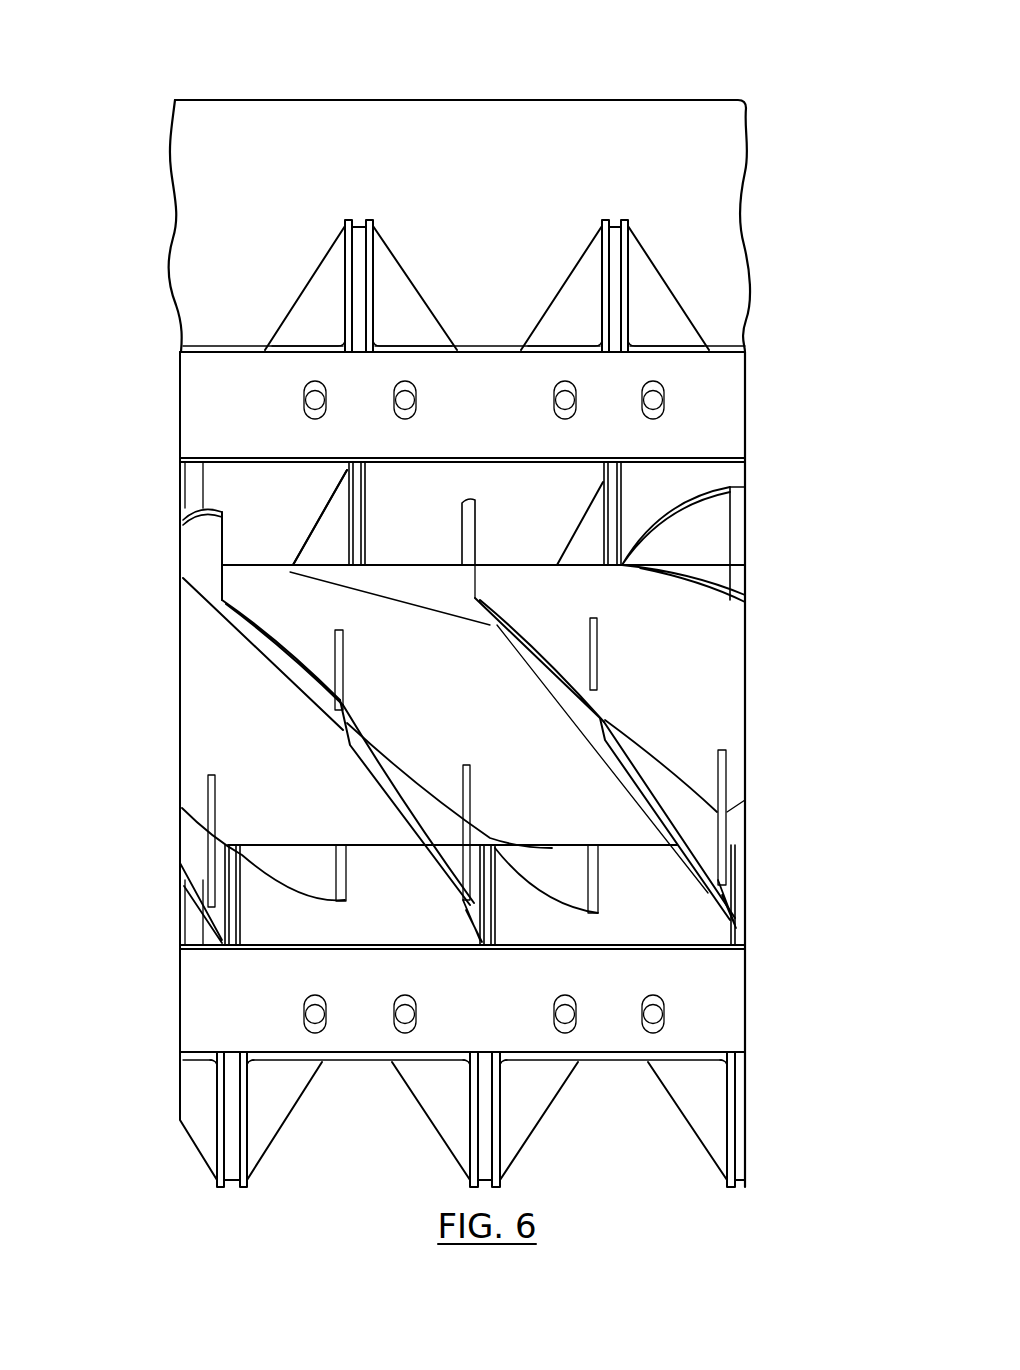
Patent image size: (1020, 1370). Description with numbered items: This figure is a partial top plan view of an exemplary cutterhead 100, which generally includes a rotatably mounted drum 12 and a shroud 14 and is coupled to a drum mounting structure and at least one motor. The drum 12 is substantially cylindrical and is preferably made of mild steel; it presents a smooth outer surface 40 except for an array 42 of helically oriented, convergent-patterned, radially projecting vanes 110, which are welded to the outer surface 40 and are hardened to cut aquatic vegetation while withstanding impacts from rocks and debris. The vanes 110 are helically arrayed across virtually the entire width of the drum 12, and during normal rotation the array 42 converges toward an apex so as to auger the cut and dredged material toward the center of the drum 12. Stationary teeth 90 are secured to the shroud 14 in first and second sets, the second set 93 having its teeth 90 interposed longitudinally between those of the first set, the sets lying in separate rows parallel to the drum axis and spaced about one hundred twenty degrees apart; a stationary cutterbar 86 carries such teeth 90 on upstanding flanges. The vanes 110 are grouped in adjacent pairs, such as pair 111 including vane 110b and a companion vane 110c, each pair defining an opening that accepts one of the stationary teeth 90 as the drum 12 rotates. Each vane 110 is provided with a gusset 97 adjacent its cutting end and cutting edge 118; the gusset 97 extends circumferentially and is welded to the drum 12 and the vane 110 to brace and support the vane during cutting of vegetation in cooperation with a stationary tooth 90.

The cutterhead 100 is at (708, 66).
The shroud 14 is at (548, 125).
The stationary cutterbar 86 is at (733, 428).
The drum 12 is at (728, 633).
The outer surface 40 is at (720, 720).
The array 42 is at (628, 680).
The stationary teeth 90 is at (618, 498).
The second set of stationary teeth 93 is at (230, 940).
The gusset 97 is at (597, 642).
The vane 110 is at (200, 543).
The vane 110b is at (478, 540).
The gusset 110c is at (328, 535).
The pair of vanes 111 is at (385, 596).
The cutting edge 118 is at (502, 590).